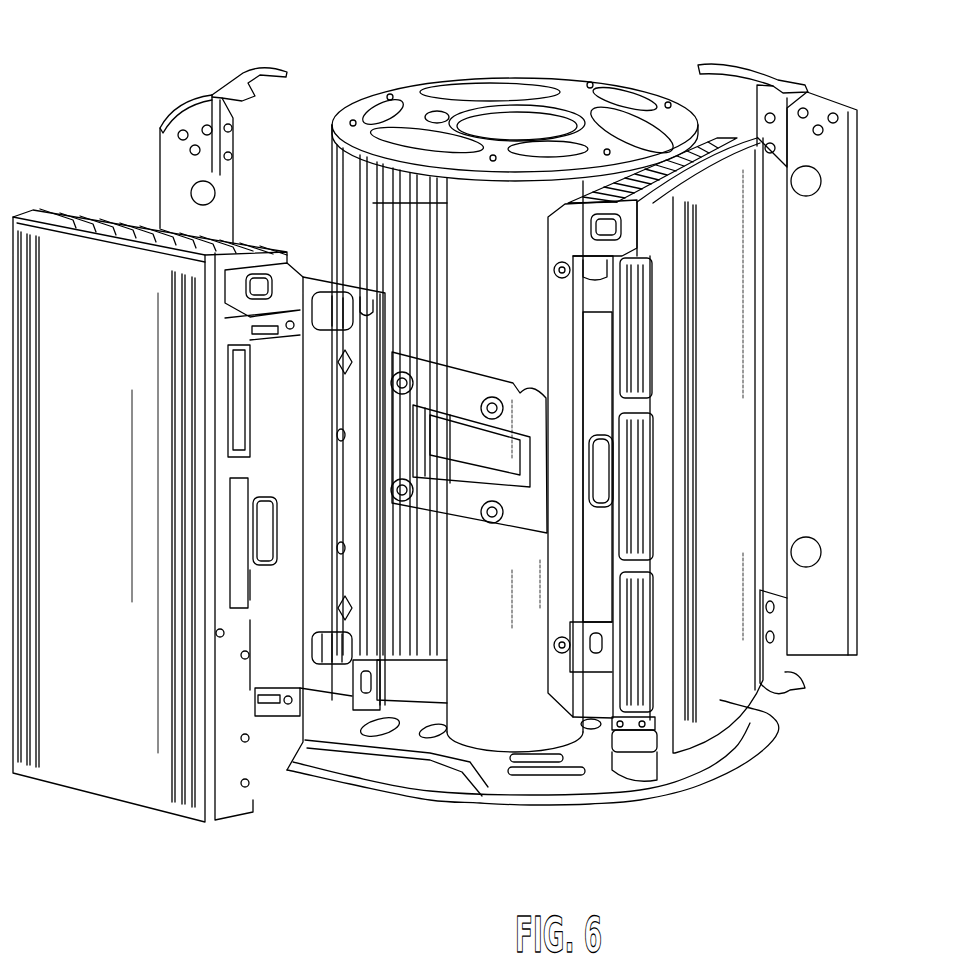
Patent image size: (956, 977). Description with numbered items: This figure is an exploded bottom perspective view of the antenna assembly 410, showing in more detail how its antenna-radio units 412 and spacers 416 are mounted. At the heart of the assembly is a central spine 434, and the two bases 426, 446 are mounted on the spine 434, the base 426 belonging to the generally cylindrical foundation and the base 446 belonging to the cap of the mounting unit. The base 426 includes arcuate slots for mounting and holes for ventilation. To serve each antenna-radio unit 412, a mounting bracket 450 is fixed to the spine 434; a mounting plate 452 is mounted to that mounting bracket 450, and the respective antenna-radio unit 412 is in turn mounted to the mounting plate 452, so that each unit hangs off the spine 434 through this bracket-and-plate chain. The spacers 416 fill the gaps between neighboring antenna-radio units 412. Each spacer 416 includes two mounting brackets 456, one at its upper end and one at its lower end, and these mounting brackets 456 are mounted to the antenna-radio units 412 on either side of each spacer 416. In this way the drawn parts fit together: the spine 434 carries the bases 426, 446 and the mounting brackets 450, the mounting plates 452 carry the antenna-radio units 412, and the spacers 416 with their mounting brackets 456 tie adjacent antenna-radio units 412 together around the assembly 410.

The antenna assembly 410 is at (473, 452).
The antenna-radio unit 412 is at (107, 785).
The spacer 416 is at (828, 314).
The base 426 is at (522, 785).
The spine 434 is at (527, 712).
The base 446 is at (663, 103).
The mounting bracket 450 is at (530, 396).
The mounting plate 452 is at (332, 603).
The mounting bracket 456 is at (778, 90).